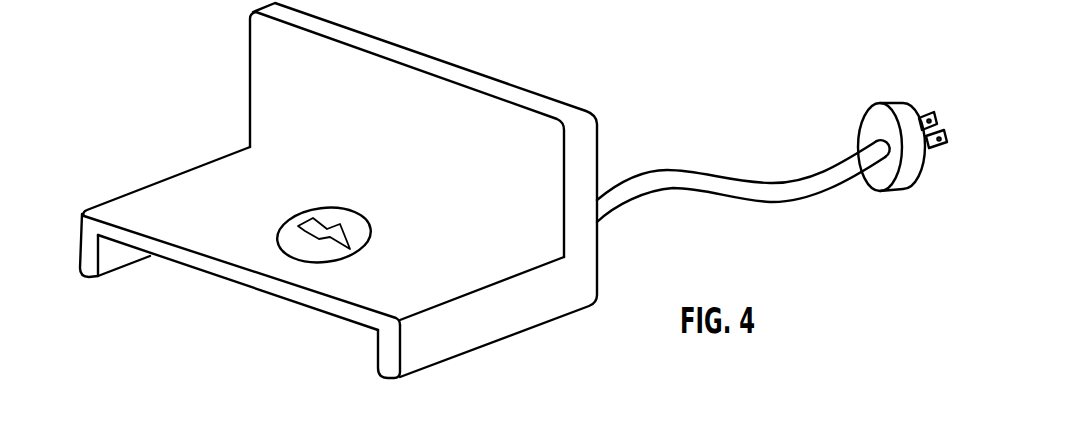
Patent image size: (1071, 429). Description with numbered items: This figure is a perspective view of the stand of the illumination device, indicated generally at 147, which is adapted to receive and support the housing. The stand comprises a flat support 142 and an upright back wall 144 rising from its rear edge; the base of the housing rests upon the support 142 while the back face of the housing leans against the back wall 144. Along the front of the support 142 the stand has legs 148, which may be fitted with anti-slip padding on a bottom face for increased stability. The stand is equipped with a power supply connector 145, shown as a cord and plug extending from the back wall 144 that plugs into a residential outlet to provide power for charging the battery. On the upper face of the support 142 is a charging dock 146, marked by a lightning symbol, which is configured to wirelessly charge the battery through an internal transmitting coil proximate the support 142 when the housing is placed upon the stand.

The support 142 is at (165, 208).
The back wall 144 is at (483, 127).
The power supply connector 145 is at (883, 182).
The charging dock 146 is at (295, 245).
The charging station 147 is at (180, 82).
The legs 148 is at (85, 250).